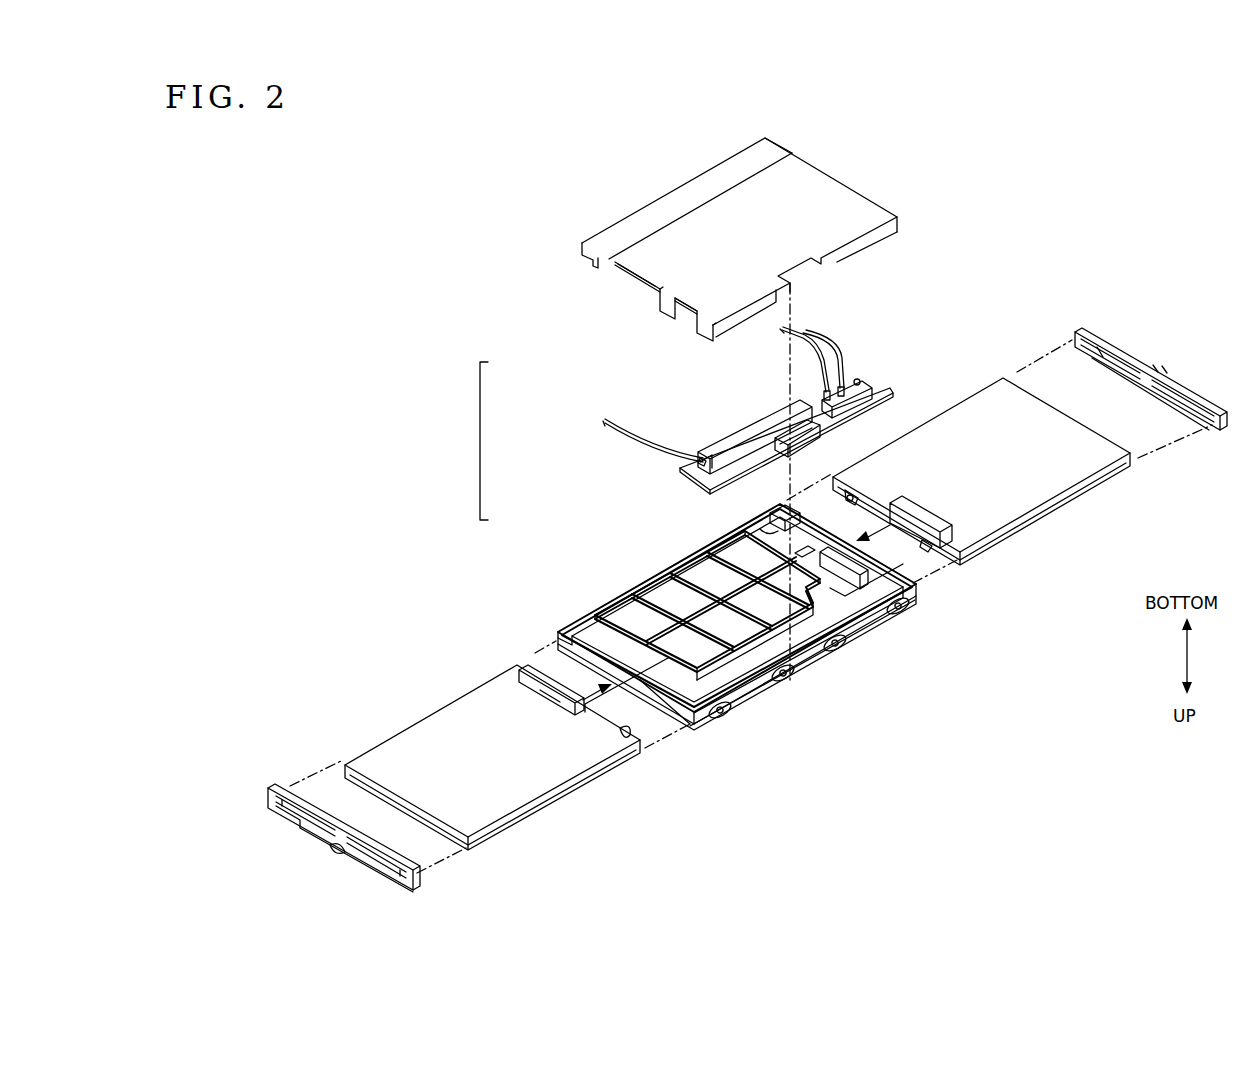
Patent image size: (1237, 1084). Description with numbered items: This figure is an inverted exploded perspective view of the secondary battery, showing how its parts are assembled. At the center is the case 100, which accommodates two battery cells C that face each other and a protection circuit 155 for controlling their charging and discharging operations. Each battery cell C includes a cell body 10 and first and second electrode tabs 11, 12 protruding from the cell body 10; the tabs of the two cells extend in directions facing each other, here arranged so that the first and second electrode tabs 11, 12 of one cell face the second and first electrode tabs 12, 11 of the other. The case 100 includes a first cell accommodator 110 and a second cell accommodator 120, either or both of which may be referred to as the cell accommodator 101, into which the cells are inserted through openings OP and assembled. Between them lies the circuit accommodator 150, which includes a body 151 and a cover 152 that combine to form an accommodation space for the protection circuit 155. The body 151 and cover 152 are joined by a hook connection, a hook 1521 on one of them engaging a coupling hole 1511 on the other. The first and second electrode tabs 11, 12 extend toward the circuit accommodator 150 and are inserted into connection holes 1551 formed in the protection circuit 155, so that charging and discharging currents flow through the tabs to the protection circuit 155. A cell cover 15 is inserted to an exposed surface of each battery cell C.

The cell body 10 is at (737, 603).
The first electrode tab 11 is at (548, 684).
The second electrode tab 12 is at (625, 735).
The cell cover 15 is at (290, 793).
The case 100 is at (773, 688).
The cell accommodator 101 is at (848, 688).
The first cell accommodator 110 is at (918, 596).
The second cell accommodator 120 is at (716, 712).
The circuit accommodator 150 is at (480, 445).
The body 151 is at (613, 593).
The coupling hole 1511 is at (762, 530).
The cover 152 is at (654, 265).
The hook 1521 is at (592, 257).
The protection circuit 155 is at (683, 480).
The connection hole 1551 is at (858, 382).
The opening OP is at (665, 697).
The battery cell C is at (545, 775).